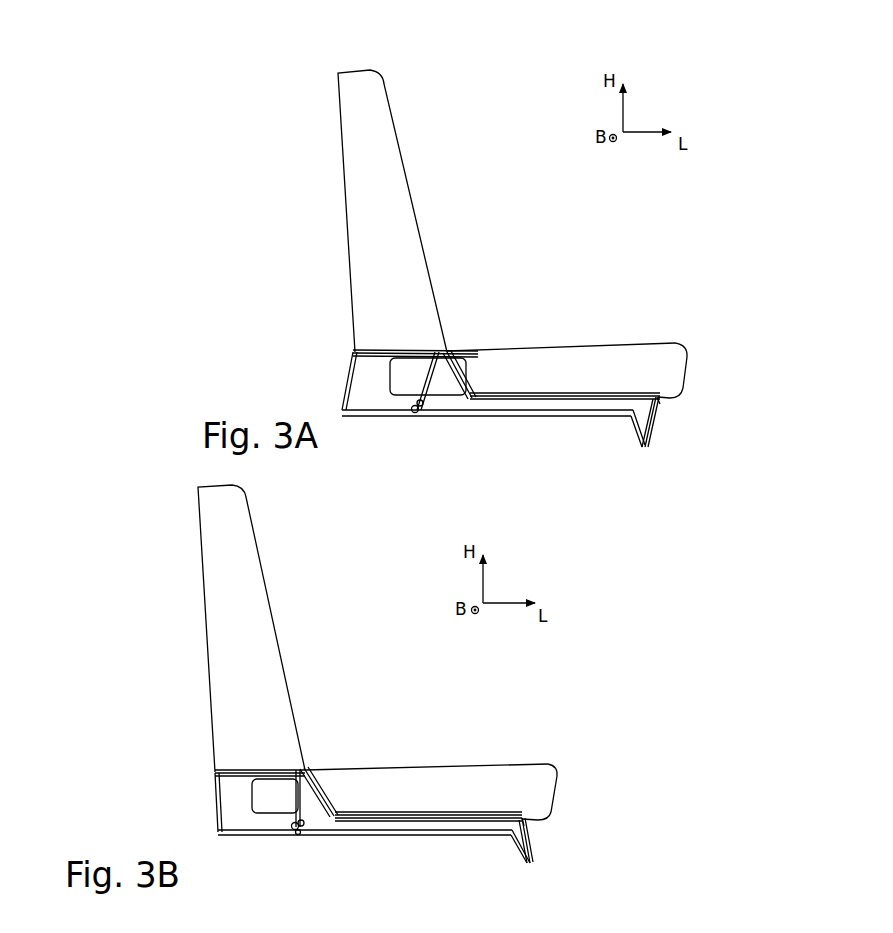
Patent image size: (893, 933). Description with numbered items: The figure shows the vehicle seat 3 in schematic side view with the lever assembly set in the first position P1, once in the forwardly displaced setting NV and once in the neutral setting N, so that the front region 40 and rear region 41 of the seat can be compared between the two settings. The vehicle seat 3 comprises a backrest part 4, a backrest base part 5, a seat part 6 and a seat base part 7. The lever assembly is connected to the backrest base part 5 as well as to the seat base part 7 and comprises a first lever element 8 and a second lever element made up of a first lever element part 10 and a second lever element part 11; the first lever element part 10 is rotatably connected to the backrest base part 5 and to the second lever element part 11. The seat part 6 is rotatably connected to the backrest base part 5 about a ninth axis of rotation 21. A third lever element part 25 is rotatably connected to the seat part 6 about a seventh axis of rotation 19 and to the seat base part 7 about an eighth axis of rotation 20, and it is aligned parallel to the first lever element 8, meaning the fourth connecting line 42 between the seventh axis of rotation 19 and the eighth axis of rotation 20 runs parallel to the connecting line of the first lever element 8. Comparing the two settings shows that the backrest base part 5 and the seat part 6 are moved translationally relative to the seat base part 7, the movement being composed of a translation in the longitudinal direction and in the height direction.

In FIG. 3A, the vehicle seat 3 is at (697, 212).
In FIG. 3B, the vehicle seat 3 is at (558, 682).
In FIG. 3A, the backrest part 4 is at (380, 110).
In FIG. 3B, the backrest part 4 is at (243, 559).
In FIG. 3A, the backrest base part 5 is at (372, 352).
In FIG. 3B, the backrest base part 5 is at (230, 768).
In FIG. 3A, the seat part 6 is at (570, 363).
In FIG. 3B, the seat part 6 is at (427, 778).
In FIG. 3A, the seat base part 7 is at (368, 415).
In FIG. 3B, the seat base part 7 is at (232, 837).
In FIG. 3A, the first lever element 8 is at (342, 381).
In FIG. 3B, the first lever element 8 is at (217, 823).
In FIG. 3A, the first lever element part 10 is at (431, 378).
In FIG. 3B, the first lever element part 10 is at (305, 805).
In FIG. 3A, the second lever element part 11 is at (413, 410).
In FIG. 3B, the second lever element part 11 is at (292, 838).
In FIG. 3A, the seventh axis of rotation 19 is at (674, 344).
In FIG. 3B, the seventh axis of rotation 19 is at (523, 803).
In FIG. 3A, the eighth axis of rotation 20 is at (647, 450).
In FIG. 3B, the eighth axis of rotation 20 is at (530, 865).
In FIG. 3A, the ninth axis of rotation 21 is at (473, 397).
In FIG. 3B, the ninth axis of rotation 21 is at (337, 813).
In FIG. 3A, the third lever element part 25 is at (658, 408).
In FIG. 3B, the third lever element part 25 is at (532, 829).
In FIG. 3A, the front region 40 is at (660, 305).
In FIG. 3B, the front region 40 is at (483, 742).
In FIG. 3A, the rear region 41 is at (288, 138).
In FIG. 3B, the rear region 41 is at (162, 517).
In FIG. 3A, the fourth connecting line 42 is at (652, 422).
In FIG. 3B, the fourth connecting line 42 is at (533, 838).
In FIG. 3B, the neutral setting N is at (125, 460).
In FIG. 3A, the forwardly displaced setting NV is at (250, 82).
In FIG. 3A, the first position P1 is at (220, 128).
In FIG. 3B, the first position P1 is at (92, 505).